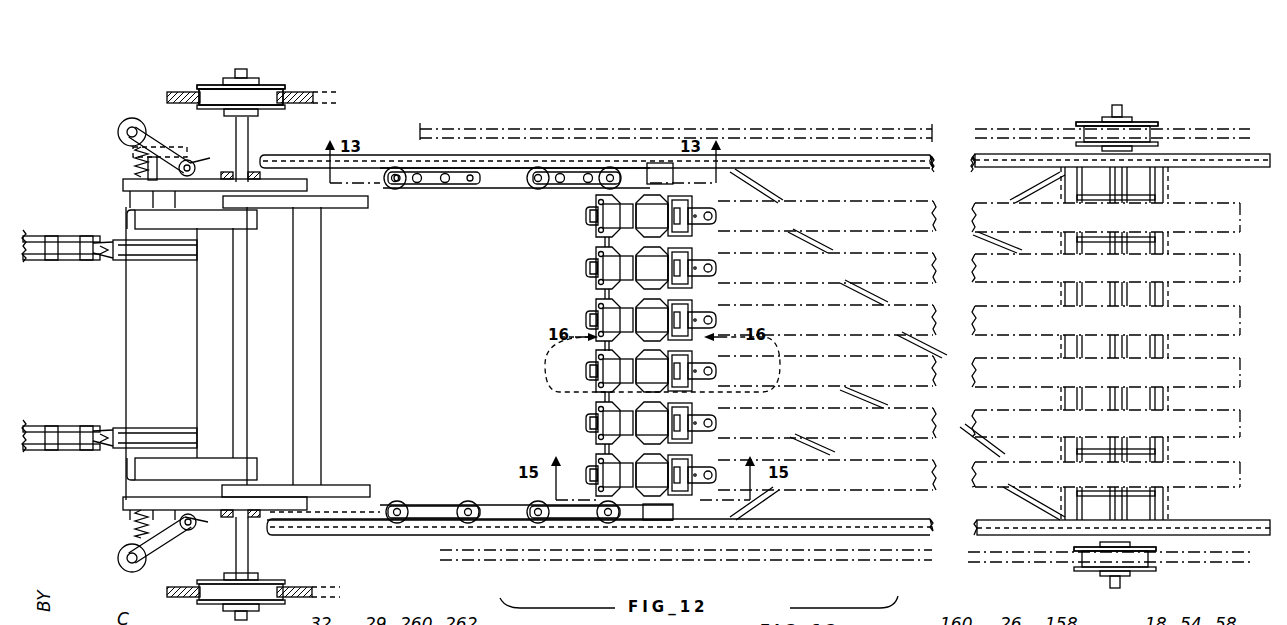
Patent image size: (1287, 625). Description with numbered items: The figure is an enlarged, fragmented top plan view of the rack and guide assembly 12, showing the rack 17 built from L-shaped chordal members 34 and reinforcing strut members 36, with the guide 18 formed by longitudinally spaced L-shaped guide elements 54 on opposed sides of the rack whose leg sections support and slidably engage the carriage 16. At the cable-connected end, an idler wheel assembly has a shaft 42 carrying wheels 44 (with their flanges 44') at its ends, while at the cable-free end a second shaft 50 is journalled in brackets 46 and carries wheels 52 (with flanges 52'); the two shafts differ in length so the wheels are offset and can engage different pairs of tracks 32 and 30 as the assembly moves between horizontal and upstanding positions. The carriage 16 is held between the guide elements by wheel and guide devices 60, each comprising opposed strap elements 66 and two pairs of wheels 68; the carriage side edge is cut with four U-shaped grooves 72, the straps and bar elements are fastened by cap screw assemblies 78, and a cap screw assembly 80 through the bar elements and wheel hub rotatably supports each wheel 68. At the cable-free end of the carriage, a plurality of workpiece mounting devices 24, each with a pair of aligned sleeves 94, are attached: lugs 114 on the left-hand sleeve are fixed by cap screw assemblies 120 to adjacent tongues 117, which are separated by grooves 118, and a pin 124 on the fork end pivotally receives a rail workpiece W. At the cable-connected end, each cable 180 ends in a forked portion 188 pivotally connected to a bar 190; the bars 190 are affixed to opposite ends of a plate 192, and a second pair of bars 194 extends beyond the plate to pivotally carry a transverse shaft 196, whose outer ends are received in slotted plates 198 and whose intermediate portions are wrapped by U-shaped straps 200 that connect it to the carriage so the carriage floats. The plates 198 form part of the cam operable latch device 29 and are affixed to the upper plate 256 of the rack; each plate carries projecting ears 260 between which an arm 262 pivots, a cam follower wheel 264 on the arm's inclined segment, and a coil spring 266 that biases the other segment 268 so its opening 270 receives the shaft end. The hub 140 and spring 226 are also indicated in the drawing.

The rack and guide assembly 12 is at (386, 120).
The carriage 16 is at (416, 337).
The rack 17 is at (116, 340).
The guide 18 is at (826, 134).
The workpiece swivel and pivotal mounting device 24 is at (585, 272).
The cam operable latch device 29 is at (152, 117).
The tracks 30 is at (1056, 128).
The tracks 32 is at (178, 92).
The L-shaped chordal members 34 is at (975, 170).
The reinforcing strut members 36 is at (1062, 296).
The shaft 42 is at (251, 128).
The wheels 44 is at (258, 325).
The sprocket flange 44' is at (241, 59).
The brackets 46 is at (1108, 242).
The shaft 50 is at (1114, 188).
The wheels 52 is at (1116, 337).
The idler wheel flange 52' is at (1080, 328).
The L-shaped guide elements 54 is at (736, 153).
The wheel and guide device 60 is at (448, 200).
The strap elements 66 is at (506, 168).
The wheels 68 is at (608, 167).
The grooves 72 is at (626, 164).
The cap screw assemblies 78 is at (420, 183).
The cap screw assembly 80 is at (397, 186).
The sleeves 94 is at (611, 292).
The lugs 114 is at (634, 371).
The tongues 117 is at (596, 304).
The groove 118 is at (588, 262).
The cap screw assemblies 120 is at (633, 371).
The pin 124 is at (713, 425).
The sprocket hub 140 is at (207, 74).
The cable 180 is at (50, 260).
The forked portion 188 is at (110, 240).
The bars 190 is at (110, 248).
The plate 192 is at (161, 353).
The bars 194 is at (238, 238).
The shaft 196 is at (243, 284).
The slotted plates 198 is at (298, 200).
The U-shaped straps 200 is at (318, 214).
The spring 226 is at (135, 158).
The upper plate 256 is at (286, 346).
The ears 260 is at (182, 172).
The arm 262 is at (195, 134).
The cam follower wheel 264 is at (118, 126).
The coil spring 266 is at (135, 523).
The segment 268 is at (258, 172).
The opening 270 is at (222, 153).
The rail workpiece W is at (1094, 323).